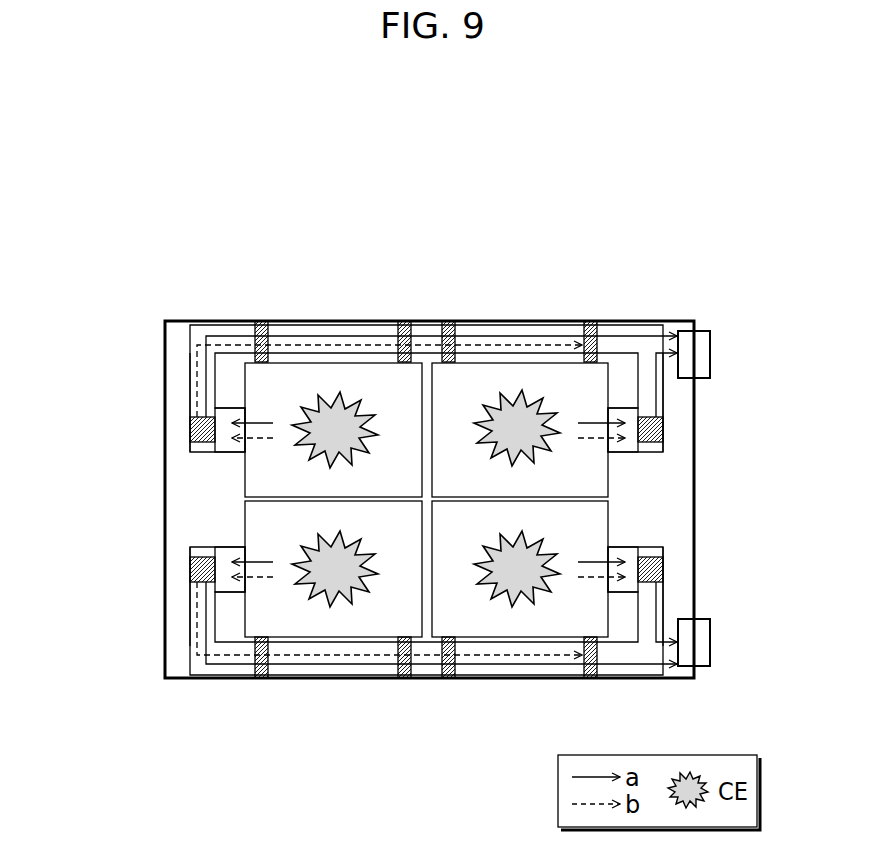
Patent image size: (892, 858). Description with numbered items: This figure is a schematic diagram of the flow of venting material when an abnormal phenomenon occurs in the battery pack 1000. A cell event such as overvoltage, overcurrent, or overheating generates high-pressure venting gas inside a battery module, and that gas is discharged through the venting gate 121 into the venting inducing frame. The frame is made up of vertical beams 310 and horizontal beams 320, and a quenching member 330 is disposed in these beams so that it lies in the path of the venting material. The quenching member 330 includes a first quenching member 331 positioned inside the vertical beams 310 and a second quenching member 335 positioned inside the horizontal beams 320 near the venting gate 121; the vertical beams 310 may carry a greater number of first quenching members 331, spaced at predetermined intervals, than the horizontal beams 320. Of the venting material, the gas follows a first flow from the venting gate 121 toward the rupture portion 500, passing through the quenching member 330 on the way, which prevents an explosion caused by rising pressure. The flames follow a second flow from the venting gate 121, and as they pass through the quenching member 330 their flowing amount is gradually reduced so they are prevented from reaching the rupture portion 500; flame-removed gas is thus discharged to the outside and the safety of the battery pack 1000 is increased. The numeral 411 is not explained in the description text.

The battery pack 1000 is at (318, 176).
The housing 411 is at (624, 321).
The vertical beam 310 is at (240, 327).
The horizontal beam 320 is at (190, 372).
The quenching member 330 is at (436, 465).
The first quenching member 331 is at (590, 321).
The second quenching member 335 is at (197, 428).
The venting gate 121 is at (228, 452).
The rupture portion 500 is at (710, 353).